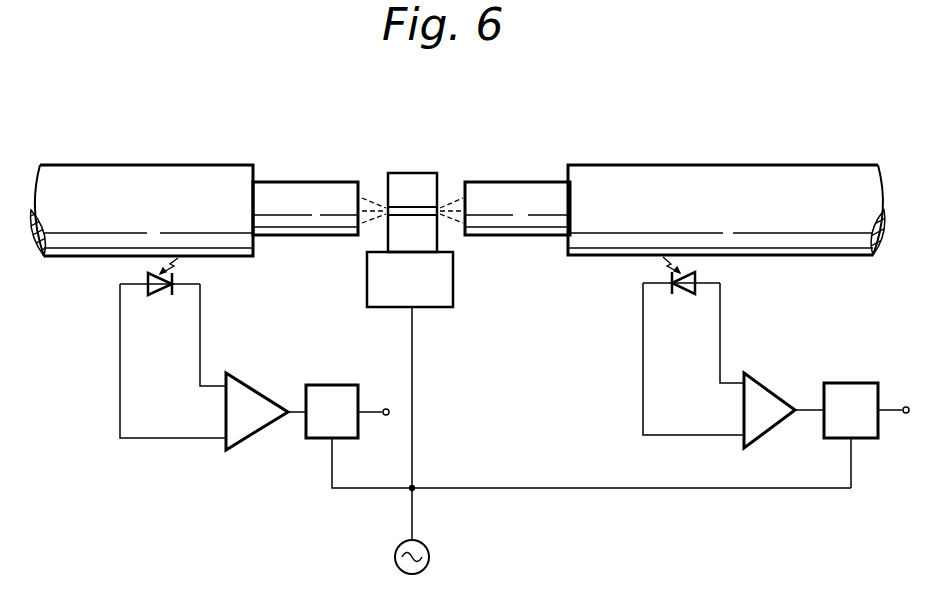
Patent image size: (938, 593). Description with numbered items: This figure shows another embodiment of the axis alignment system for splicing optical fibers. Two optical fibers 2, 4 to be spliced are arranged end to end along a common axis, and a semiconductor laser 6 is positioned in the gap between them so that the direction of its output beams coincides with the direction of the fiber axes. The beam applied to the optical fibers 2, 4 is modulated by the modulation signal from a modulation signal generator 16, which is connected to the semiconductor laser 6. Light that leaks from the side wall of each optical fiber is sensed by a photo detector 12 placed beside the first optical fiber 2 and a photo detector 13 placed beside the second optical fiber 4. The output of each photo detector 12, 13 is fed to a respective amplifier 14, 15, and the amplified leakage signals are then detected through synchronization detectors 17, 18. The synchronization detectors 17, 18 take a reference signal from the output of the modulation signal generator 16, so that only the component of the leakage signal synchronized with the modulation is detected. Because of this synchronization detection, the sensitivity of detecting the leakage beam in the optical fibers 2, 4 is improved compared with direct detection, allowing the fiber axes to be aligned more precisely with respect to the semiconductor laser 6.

The optical fiber 2 is at (149, 170).
The optical fiber 4 is at (760, 170).
The semiconductor laser 6 is at (424, 177).
The photo detector 12 is at (160, 296).
The photo detector 13 is at (688, 295).
The amplifier 14 is at (243, 450).
The amplifier 15 is at (773, 396).
The modulation signal generator 16 is at (430, 557).
The synchronization detector 17 is at (314, 439).
The synchronization detector 18 is at (855, 388).